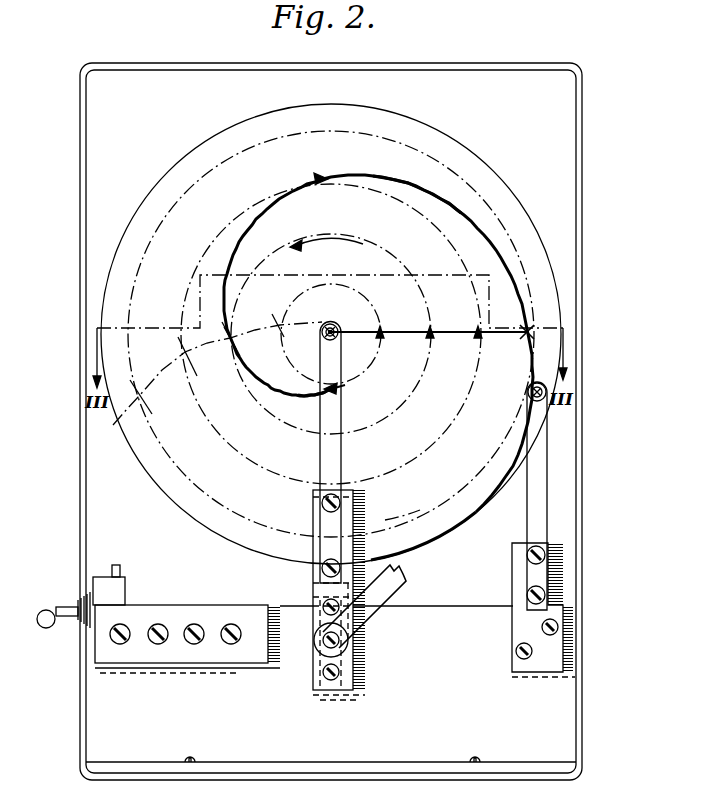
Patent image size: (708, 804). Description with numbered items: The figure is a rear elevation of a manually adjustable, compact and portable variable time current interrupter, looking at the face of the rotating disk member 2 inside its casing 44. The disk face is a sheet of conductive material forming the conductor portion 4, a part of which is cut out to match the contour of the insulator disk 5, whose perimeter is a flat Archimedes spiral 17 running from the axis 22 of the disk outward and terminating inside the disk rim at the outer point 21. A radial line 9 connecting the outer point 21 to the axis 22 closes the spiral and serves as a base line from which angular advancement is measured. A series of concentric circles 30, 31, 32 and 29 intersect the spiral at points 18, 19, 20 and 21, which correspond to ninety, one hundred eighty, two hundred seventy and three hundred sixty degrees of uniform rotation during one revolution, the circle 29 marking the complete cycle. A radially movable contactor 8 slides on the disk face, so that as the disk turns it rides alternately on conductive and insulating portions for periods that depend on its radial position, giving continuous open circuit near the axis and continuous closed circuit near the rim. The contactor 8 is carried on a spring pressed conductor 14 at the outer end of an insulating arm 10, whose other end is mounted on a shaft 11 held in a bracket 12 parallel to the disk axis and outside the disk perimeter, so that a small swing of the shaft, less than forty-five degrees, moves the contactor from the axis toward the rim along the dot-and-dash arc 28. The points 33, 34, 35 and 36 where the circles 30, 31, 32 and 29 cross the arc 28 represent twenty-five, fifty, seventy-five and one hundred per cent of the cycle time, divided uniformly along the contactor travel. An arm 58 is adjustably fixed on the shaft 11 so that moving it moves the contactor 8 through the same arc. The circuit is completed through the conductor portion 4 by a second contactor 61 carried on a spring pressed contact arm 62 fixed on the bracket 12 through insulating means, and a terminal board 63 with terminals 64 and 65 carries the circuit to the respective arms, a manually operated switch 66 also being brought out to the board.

The disk member 2 is at (506, 193).
The conductor portion of the disk 4 is at (511, 223).
The insulator disk 5 is at (442, 215).
The contactor 8 is at (329, 324).
The radial line 9 is at (447, 336).
The arm 10 is at (313, 574).
The shaft 11 is at (325, 656).
The bracket 12 is at (428, 608).
The spring pressed conductor 14 is at (342, 447).
The flat spiral 17 is at (411, 182).
The point 18 is at (334, 392).
The point 19 is at (227, 337).
The point 20 is at (328, 186).
The outer point 21 is at (533, 332).
The axis of the disk 22 is at (361, 297).
The arc 28 is at (166, 396).
The concentric circle 29 is at (385, 520).
The concentric circle 30 is at (311, 390).
The concentric circle 31 is at (297, 425).
The concentric circle 32 is at (262, 462).
The point 33 is at (276, 330).
The point 34 is at (230, 343).
The point 35 is at (188, 380).
The point 36 is at (140, 397).
The casing 44 is at (80, 263).
The arm 58 is at (367, 613).
The contactor 61 is at (538, 404).
The spring pressed contact arm 62 is at (538, 500).
The terminal board 63 is at (560, 580).
The terminal 64 is at (232, 645).
The terminal 65 is at (196, 645).
The switch 66 is at (106, 584).